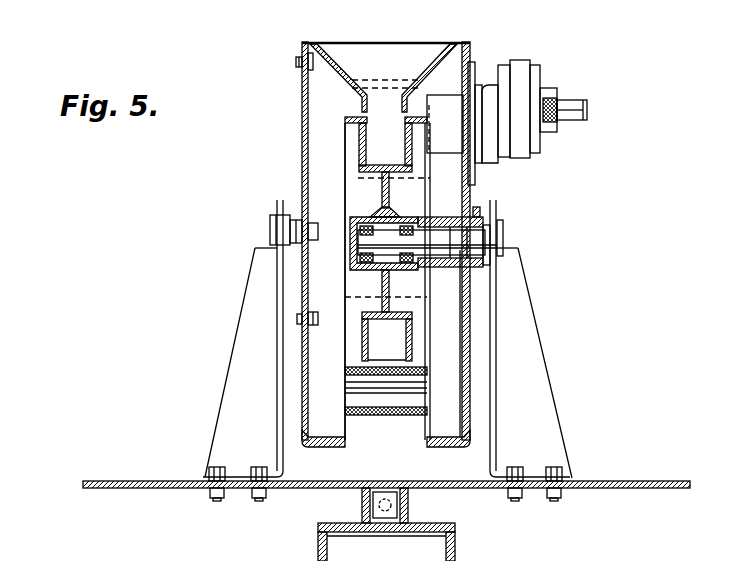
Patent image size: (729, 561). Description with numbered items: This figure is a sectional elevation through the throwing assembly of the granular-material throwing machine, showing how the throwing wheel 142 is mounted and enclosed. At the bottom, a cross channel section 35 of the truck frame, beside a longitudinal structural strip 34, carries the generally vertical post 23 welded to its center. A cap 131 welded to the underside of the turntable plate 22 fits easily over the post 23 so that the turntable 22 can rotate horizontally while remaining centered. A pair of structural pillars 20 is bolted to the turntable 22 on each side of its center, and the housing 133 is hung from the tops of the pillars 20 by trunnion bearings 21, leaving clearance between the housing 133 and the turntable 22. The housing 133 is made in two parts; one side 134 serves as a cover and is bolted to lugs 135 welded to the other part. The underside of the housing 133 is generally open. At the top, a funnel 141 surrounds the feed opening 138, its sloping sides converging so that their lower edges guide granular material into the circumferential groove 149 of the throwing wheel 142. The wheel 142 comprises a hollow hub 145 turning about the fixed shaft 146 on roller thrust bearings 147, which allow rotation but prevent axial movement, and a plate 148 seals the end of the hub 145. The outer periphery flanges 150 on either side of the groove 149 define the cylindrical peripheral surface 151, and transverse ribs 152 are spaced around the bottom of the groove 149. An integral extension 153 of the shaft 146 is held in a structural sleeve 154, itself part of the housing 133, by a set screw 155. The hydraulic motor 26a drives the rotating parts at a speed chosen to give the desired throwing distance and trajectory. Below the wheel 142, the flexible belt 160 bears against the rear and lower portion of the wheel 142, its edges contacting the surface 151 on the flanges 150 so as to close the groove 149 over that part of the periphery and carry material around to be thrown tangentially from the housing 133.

The cover side of housing 134 is at (305, 108).
The throwing wheel 142 is at (468, 305).
The housing 133 is at (470, 323).
The funnel 141 is at (337, 68).
The feed opening 138 is at (398, 55).
The outer periphery flanges 150 is at (347, 120).
The circumferential groove 149 is at (377, 137).
The hollow hub 145 is at (392, 213).
The transverse ribs 152 is at (377, 157).
The roller thrust bearings 147 is at (347, 220).
The fixed shaft 146 is at (352, 256).
The plate 148 is at (355, 248).
The set screw 155 is at (485, 202).
The integral extension of shaft 153 is at (470, 205).
The structural sleeve 154 is at (477, 270).
The trunnion bearings 21 is at (270, 226).
The lugs 135 is at (300, 75).
The flexible belt 160 is at (345, 375).
The peripheral surface 151 is at (428, 93).
The hydraulic motor 26a is at (517, 70).
The pillars 20 is at (225, 379).
The turntable plate 22 is at (600, 481).
The post 23 is at (362, 504).
The cap 131 is at (408, 505).
The channel section 35 is at (462, 541).
The longitudinal structural strips 34 is at (398, 535).